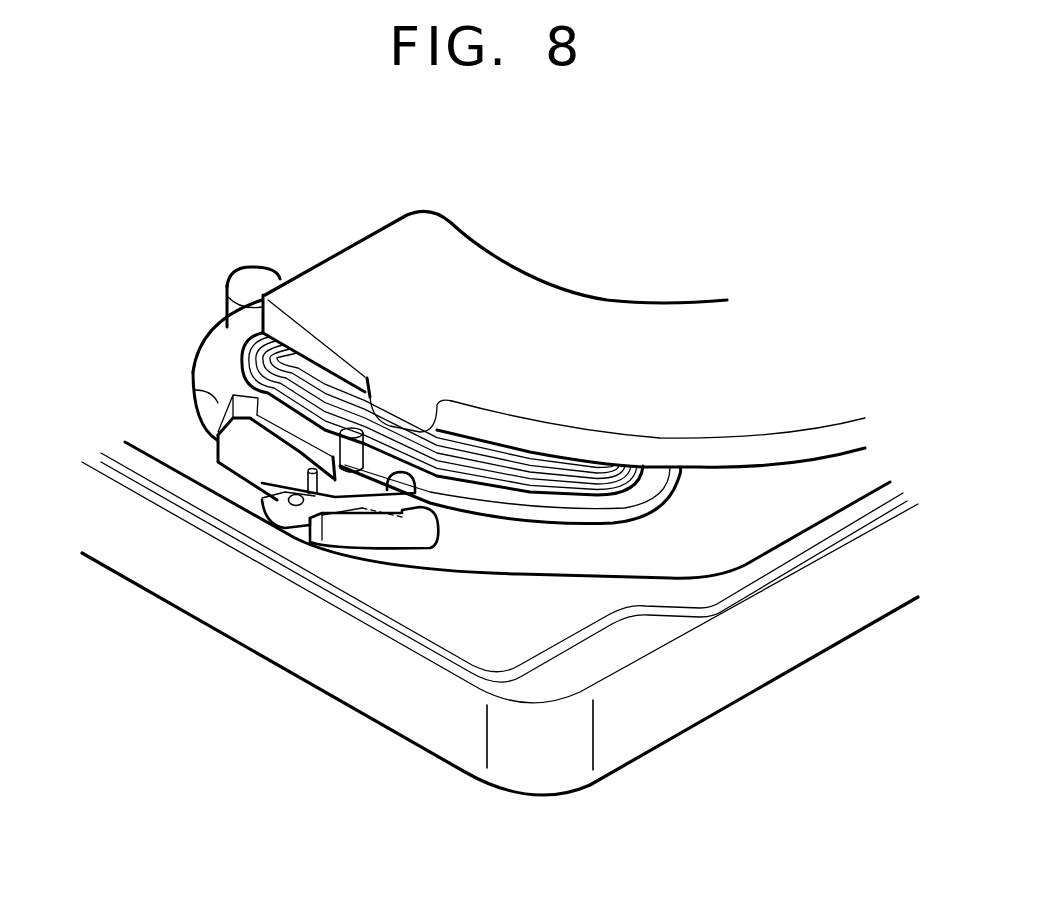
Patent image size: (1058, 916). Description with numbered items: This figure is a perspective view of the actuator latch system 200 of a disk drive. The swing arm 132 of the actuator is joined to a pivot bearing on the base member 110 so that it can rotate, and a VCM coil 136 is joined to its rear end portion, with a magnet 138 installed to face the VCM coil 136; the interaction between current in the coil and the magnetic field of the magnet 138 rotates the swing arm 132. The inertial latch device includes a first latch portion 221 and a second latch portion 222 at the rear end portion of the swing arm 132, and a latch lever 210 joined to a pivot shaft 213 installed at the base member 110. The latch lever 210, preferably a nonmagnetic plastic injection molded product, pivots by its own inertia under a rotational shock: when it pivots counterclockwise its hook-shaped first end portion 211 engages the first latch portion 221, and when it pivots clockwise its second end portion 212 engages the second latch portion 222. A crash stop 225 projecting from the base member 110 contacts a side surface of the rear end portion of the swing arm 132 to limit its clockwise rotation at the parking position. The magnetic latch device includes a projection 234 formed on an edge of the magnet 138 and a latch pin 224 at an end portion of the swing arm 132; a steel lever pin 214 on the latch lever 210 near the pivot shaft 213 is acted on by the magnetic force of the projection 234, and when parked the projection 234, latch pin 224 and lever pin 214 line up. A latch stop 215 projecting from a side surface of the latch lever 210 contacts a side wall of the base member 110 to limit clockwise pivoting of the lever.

The base member 110 is at (397, 717).
The swing arm 132 is at (213, 345).
The VCM coil 136 is at (612, 467).
The magnet 138 is at (605, 312).
The actuator latch system 200 is at (483, 540).
The latch lever 210 is at (247, 490).
The first end portion 211 is at (423, 545).
The second end portion 212 is at (220, 455).
The pivot shaft 213 is at (292, 507).
The lever pin 214 is at (321, 466).
The latch stop 215 is at (305, 533).
The first latch portion 221 is at (445, 460).
The second latch portion 222 is at (208, 396).
The latch pin 224 is at (363, 428).
The crash stop 225 is at (240, 280).
The projection 234 is at (395, 393).